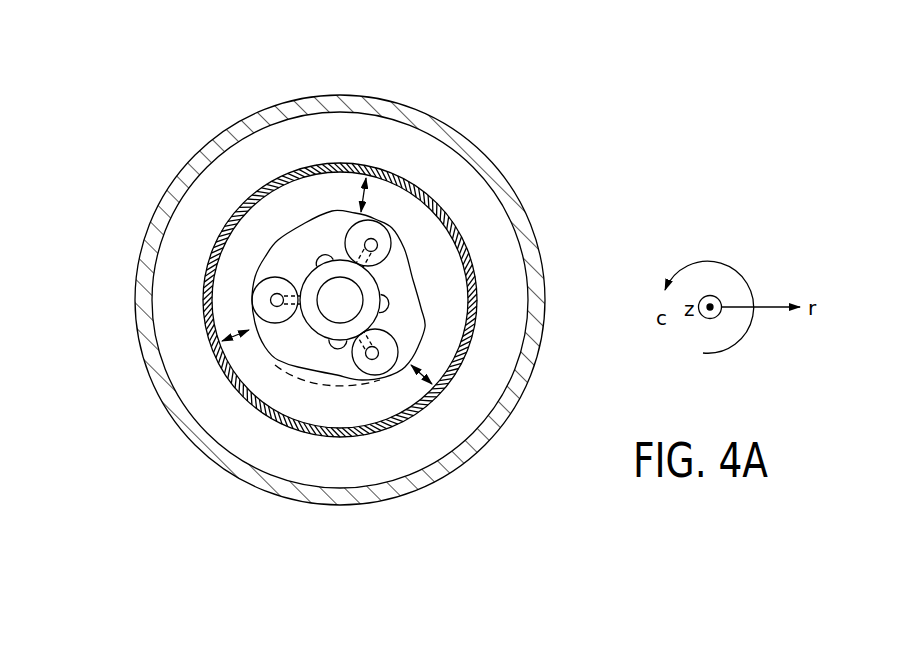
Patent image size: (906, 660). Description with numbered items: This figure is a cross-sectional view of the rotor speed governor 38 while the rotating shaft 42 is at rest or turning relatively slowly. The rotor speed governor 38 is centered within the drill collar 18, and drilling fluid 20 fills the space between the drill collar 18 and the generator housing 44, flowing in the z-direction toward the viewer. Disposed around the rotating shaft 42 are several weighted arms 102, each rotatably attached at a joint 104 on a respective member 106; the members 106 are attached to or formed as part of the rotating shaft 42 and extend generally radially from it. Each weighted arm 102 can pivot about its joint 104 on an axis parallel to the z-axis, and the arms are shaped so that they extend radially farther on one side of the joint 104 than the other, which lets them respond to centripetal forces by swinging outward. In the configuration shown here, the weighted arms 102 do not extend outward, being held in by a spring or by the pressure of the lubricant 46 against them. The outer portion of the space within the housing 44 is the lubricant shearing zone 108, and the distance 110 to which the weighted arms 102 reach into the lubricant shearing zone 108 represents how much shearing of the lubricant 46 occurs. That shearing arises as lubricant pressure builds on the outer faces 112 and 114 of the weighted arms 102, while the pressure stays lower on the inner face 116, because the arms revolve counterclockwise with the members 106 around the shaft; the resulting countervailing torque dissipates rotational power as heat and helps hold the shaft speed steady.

The drill collar 18 is at (341, 105).
The drilling fluid 20 is at (355, 147).
The rotor speed governor 38 is at (400, 190).
The rotating shaft 42 is at (341, 364).
The generator housing 44 is at (371, 238).
The lubricant 46 is at (268, 245).
The weighted arms 102 is at (228, 238).
The joint 104 is at (399, 214).
The member 106 is at (400, 240).
The lubricant shearing zone 108 is at (221, 281).
The distance 110 is at (330, 263).
The outer face 112 is at (320, 212).
The outer face 114 is at (268, 283).
The inner face 116 is at (300, 240).